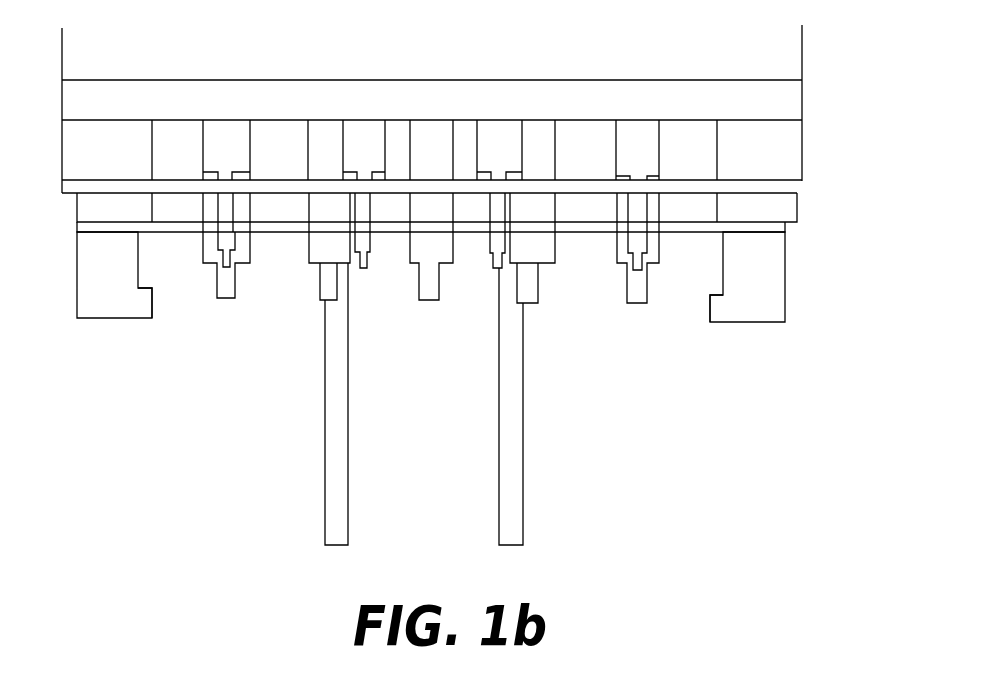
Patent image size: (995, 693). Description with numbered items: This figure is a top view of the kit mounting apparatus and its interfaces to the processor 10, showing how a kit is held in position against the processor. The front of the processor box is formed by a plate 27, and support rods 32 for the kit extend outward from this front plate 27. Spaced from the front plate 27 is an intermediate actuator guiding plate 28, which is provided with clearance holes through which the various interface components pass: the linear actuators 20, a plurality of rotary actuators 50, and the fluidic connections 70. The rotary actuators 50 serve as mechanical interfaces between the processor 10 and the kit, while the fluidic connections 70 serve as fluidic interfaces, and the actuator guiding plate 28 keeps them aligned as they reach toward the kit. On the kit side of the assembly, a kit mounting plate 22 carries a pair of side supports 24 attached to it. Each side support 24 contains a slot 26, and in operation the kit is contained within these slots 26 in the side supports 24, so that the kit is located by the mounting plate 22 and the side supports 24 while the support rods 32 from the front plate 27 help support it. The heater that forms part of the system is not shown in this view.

The processor 10 is at (392, 48).
The actuator guiding plate 28 is at (680, 113).
The rotary actuators 50 is at (210, 160).
The fluidic connections 70 is at (418, 156).
The plate 27 is at (793, 187).
The linear actuators 20 is at (84, 208).
The kit mounting plate 22 is at (786, 222).
The side supports 24 is at (122, 283).
The slots 26 is at (141, 277).
The support rods 32 is at (337, 507).